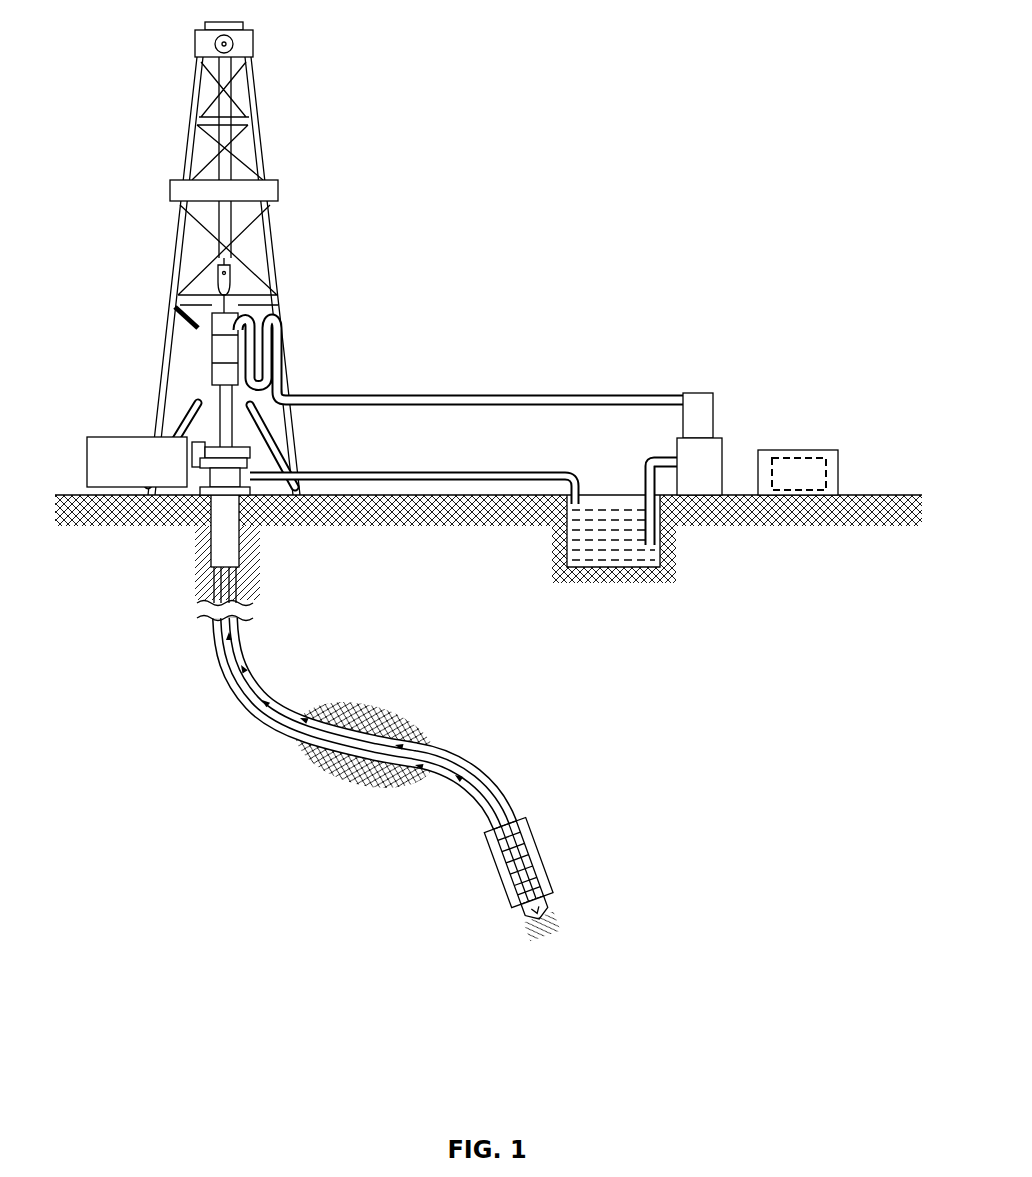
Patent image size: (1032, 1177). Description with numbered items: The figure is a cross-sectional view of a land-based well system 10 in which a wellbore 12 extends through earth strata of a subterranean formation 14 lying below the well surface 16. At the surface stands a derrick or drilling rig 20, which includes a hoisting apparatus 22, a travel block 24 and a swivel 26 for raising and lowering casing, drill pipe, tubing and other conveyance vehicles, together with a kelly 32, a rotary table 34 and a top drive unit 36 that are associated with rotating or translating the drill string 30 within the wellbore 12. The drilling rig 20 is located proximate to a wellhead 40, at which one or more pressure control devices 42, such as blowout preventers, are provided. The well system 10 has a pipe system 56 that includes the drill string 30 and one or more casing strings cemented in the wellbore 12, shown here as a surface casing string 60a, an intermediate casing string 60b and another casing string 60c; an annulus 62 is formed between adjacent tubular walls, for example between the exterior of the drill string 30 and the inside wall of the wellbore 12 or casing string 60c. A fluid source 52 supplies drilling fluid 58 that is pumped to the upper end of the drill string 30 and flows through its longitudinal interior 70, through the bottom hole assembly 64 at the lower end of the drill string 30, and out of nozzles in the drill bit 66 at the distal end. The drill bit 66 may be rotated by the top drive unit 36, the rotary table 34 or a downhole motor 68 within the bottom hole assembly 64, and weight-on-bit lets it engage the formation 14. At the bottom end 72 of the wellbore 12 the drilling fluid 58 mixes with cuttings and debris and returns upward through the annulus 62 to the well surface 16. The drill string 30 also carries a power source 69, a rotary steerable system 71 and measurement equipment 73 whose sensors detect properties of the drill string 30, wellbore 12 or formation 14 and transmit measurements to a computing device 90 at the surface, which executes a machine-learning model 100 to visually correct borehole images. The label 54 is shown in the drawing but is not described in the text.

The well system 10 is at (313, 138).
The wellbore 12 is at (283, 730).
The subterranean formation 14 is at (688, 626).
The well surface 16 is at (68, 495).
The drilling rig 20 is at (196, 40).
The hoisting apparatus 22 is at (242, 47).
The travel block 24 is at (235, 285).
The swivel 26 is at (225, 332).
The drill string 30 is at (265, 677).
The kelly 32 is at (217, 427).
The rotary table 34 is at (252, 447).
The top drive unit 36 is at (222, 370).
The wellhead 40 is at (257, 462).
The pressure control device 42 is at (207, 480).
The fluid source 52 is at (645, 567).
The bottom hole assembly 54 is at (518, 768).
The pipe system 56 is at (232, 698).
The drilling fluid 58 is at (220, 656).
The surface casing string 60a is at (203, 513).
The intermediate casing string 60b is at (207, 550).
The casing string 60c is at (242, 590).
The annulus 62 is at (281, 694).
The bottom hole assembly 64 is at (512, 872).
The drill bit 66 is at (532, 915).
The downhole motor 68 is at (527, 845).
The power source 69 is at (535, 872).
The longitudinal interior 70 is at (488, 787).
The rotary steerable system 71 is at (552, 880).
The bottom end 72 is at (557, 937).
The measurement equipment 73 is at (523, 897).
The computing device 90 is at (800, 450).
The machine-learning model 100 is at (782, 486).